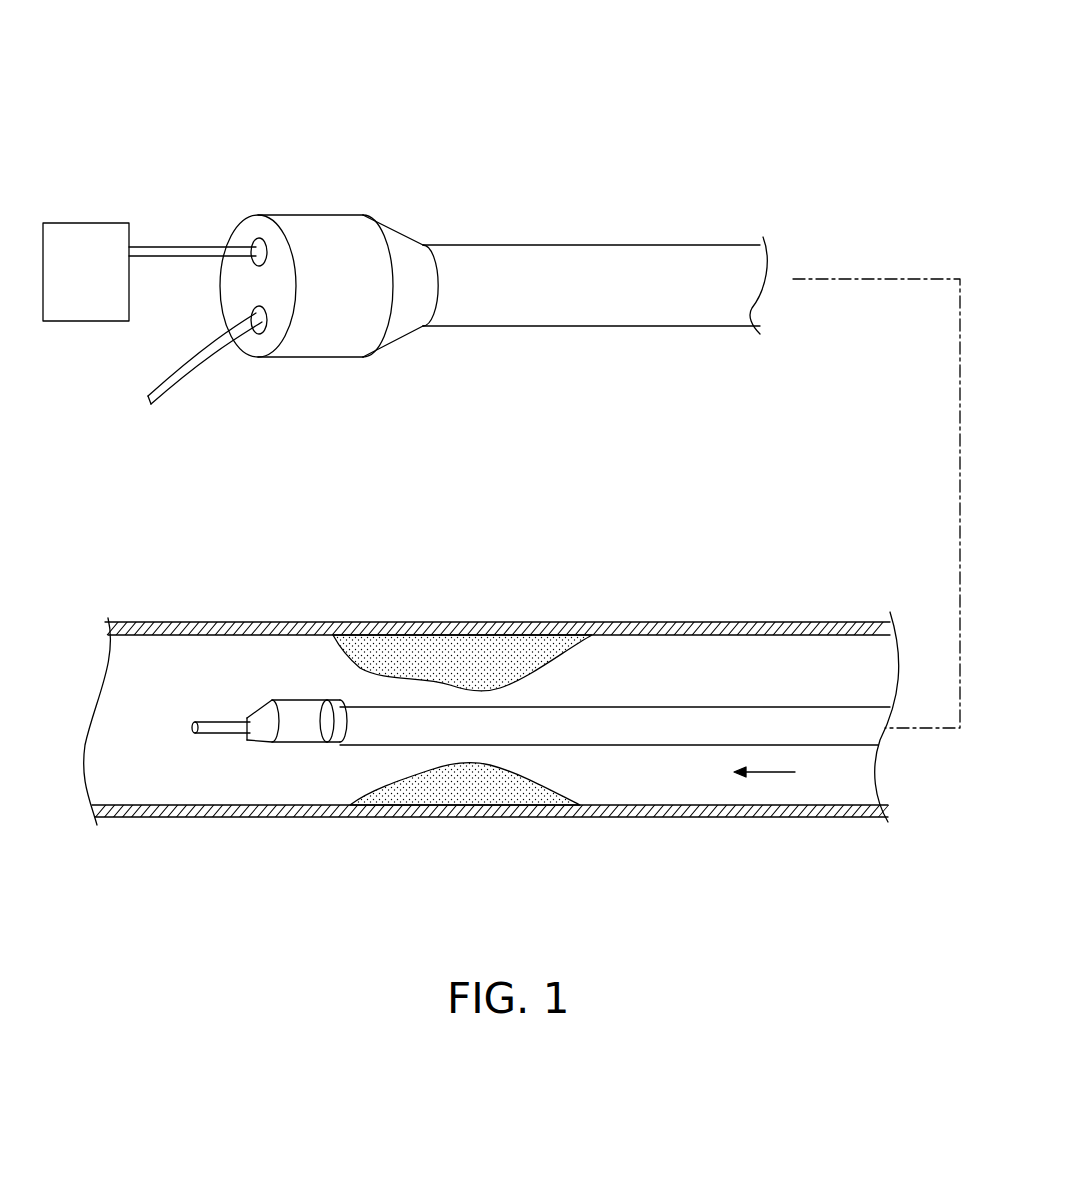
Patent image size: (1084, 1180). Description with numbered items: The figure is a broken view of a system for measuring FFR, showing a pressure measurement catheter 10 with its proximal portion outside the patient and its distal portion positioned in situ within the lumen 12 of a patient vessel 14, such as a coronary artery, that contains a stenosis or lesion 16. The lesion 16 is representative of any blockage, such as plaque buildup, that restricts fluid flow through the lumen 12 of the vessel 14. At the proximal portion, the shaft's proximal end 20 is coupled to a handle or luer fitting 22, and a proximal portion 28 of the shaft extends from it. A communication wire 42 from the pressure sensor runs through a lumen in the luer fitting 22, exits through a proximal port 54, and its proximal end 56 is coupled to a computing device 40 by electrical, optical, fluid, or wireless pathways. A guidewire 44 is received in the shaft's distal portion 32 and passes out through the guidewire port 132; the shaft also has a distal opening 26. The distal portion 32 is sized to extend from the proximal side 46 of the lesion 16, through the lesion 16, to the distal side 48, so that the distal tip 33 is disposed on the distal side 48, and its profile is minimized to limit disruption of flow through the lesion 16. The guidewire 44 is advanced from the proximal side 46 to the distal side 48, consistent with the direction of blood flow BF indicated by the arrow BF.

The pressure measurement catheter 10 is at (572, 354).
The lumen 12 is at (618, 684).
The vessel 14 is at (673, 622).
The lesion 16 is at (476, 663).
The proximal end 20 is at (420, 329).
The luer fitting 22 is at (336, 215).
The distal opening 26 is at (245, 745).
The proximal portion 28 is at (650, 205).
The distal portion 32 is at (341, 744).
The distal tip 33 is at (301, 697).
The computing device 40 is at (74, 222).
The communication wire 42 is at (187, 246).
The guidewire 44 is at (180, 399).
The proximal side 46 is at (752, 655).
The distal side 48 is at (241, 660).
The proximal port 54 is at (255, 239).
The proximal end 56 is at (148, 247).
The guidewire port 132 is at (255, 357).
The blood flow BF is at (784, 773).